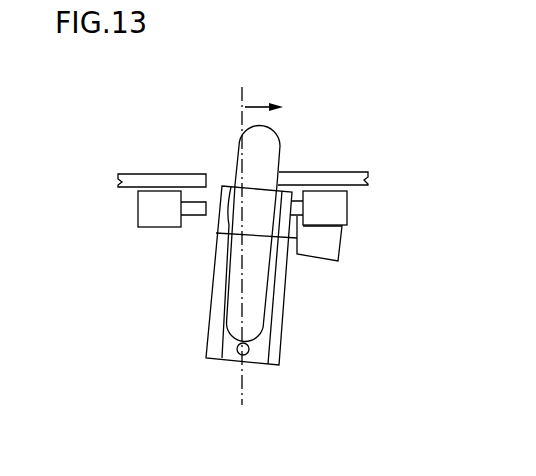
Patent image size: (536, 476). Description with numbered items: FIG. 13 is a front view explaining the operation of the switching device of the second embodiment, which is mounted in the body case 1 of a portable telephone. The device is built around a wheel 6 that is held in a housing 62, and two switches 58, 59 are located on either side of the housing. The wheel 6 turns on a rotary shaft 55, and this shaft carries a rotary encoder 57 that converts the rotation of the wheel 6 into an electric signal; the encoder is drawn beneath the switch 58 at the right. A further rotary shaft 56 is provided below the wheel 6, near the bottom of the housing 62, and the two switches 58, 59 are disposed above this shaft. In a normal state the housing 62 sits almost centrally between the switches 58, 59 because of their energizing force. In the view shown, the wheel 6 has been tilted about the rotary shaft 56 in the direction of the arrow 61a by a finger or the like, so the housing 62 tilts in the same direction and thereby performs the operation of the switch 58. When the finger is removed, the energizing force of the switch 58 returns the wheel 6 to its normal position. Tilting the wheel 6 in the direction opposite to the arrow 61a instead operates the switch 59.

The body case 1 is at (353, 175).
The wheel 6 is at (260, 150).
The rotary shaft 55 is at (218, 235).
The rotary shaft 56 is at (245, 355).
The rotary encoder 57 is at (322, 238).
The switch 58 is at (328, 208).
The switch 59 is at (152, 211).
The arrow 61a is at (253, 103).
The housing 62 is at (284, 286).